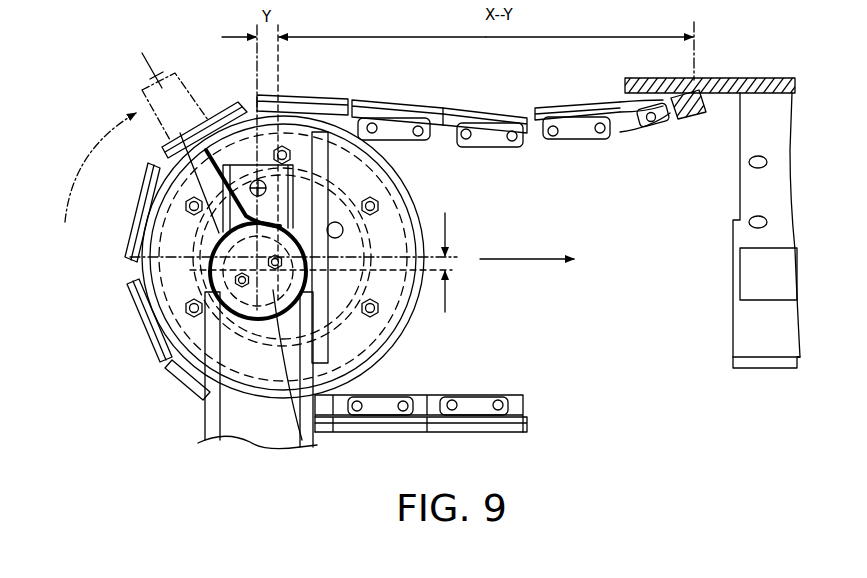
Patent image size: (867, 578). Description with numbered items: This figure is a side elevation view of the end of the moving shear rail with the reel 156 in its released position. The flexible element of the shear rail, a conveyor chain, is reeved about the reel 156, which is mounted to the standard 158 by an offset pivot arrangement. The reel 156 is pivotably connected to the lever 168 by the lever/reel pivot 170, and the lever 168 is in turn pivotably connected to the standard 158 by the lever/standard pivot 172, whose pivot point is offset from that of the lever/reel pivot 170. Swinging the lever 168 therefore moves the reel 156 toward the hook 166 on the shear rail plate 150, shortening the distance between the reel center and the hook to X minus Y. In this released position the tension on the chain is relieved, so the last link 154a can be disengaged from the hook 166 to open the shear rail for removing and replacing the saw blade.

The shear rail plate 150 is at (748, 78).
The last link 154a is at (677, 125).
The reel 156 is at (147, 263).
The standard 158 is at (252, 428).
The hook 166 is at (693, 113).
The lever 168 is at (245, 112).
The lever/reel pivot 170 is at (302, 440).
The lever/standard pivot 172 is at (268, 293).